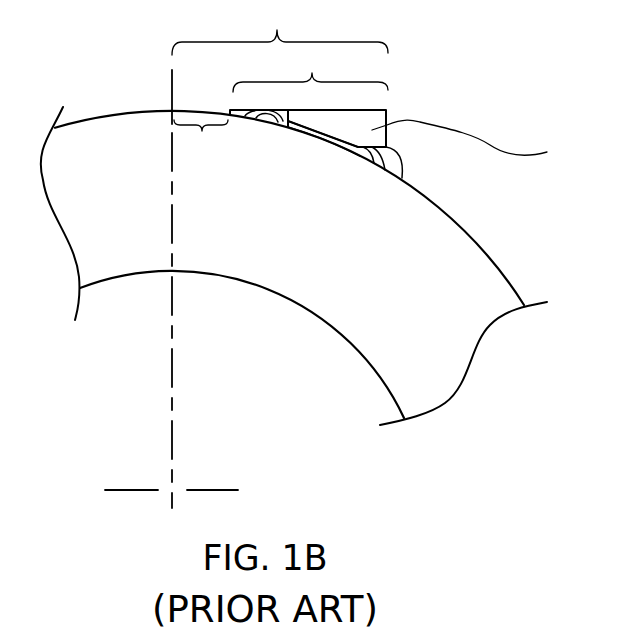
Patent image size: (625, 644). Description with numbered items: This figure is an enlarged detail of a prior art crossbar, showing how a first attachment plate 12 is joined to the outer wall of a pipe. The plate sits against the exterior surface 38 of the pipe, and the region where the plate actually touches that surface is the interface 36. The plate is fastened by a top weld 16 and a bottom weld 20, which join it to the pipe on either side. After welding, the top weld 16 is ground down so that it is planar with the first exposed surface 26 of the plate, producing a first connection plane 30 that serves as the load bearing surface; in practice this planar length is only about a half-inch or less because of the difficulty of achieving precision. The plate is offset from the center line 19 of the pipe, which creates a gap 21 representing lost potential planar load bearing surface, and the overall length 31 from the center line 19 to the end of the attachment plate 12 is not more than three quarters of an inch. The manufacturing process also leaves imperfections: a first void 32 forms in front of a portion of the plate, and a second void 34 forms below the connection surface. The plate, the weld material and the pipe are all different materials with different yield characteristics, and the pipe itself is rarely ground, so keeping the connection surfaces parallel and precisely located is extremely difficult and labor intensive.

The first attachment plate 12 is at (473, 141).
The top weld 16 is at (262, 120).
The center line 19 is at (172, 325).
The bottom weld 20 is at (403, 153).
The gap 21 is at (201, 138).
The first exposed surface 26 is at (352, 110).
The first connection plane 30 is at (310, 70).
The length 31 is at (280, 29).
The first void 32 is at (279, 123).
The second void 34 is at (357, 158).
The interface 36 is at (323, 139).
The exterior surface 38 is at (480, 247).